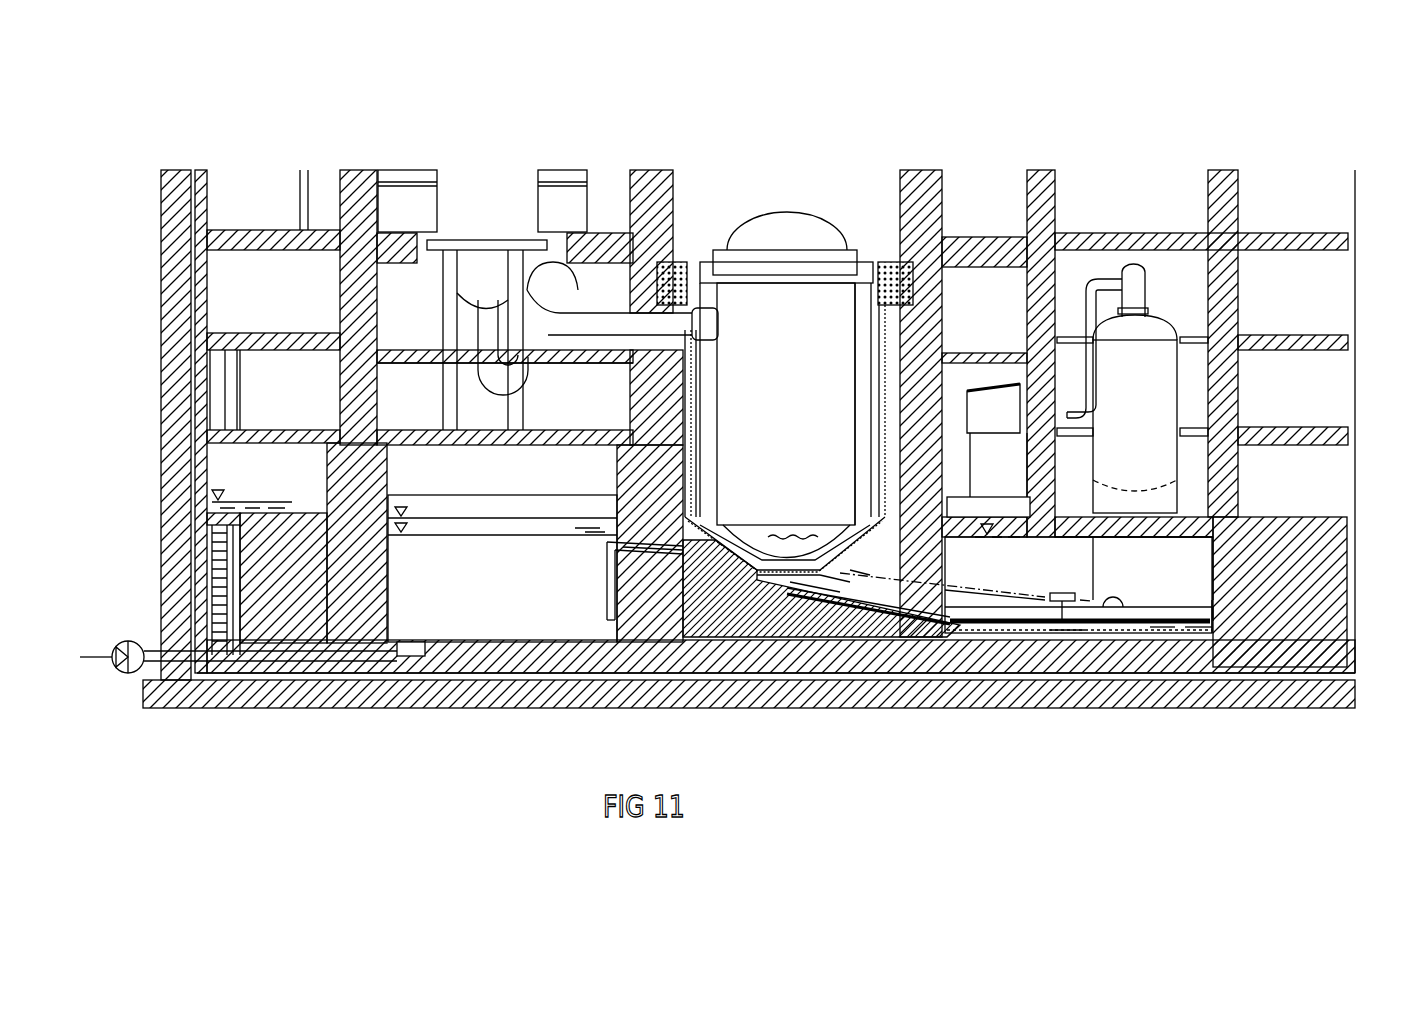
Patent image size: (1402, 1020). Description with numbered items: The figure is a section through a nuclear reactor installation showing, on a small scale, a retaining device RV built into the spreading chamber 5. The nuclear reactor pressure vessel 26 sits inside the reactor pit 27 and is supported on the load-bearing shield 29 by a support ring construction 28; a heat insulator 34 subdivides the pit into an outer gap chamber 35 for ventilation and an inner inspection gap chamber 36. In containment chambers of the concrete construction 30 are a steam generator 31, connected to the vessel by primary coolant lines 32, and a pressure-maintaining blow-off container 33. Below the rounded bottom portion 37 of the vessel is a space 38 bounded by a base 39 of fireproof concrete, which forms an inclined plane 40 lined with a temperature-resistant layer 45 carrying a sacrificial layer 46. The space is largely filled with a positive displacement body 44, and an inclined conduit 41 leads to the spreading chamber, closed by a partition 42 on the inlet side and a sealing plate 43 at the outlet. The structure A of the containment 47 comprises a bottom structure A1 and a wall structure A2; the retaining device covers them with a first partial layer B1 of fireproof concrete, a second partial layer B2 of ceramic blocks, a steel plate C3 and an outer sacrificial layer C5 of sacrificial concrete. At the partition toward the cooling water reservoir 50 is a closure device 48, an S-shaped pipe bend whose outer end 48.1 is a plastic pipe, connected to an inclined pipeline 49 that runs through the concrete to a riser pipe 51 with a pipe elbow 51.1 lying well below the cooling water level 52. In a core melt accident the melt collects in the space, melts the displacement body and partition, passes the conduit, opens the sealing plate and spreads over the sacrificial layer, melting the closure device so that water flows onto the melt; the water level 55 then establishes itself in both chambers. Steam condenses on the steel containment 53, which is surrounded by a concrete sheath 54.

The concrete sheath 54 is at (171, 185).
The containment 53 is at (202, 177).
The steam generator 31 is at (505, 188).
The primary coolant line 32 is at (498, 383).
The concrete construction 30 is at (547, 450).
The nuclear reactor pressure vessel 26 is at (820, 213).
The support ring construction 28 is at (680, 262).
The load-bearing shield 29 is at (692, 377).
The heat insulator 34 is at (688, 397).
The outer gap chamber 35 is at (688, 437).
The inner inspection gap chamber 36 is at (865, 398).
The reactor pit 27 is at (868, 353).
The containment 47 is at (994, 199).
The pressure-maintaining blow-off container 33 is at (1153, 332).
The temperature-resistant layer 45 is at (850, 547).
The water level 55 is at (987, 522).
The rounded bottom portion 37 is at (760, 592).
The space 38 is at (790, 575).
The base 39 is at (708, 610).
The sacrificial layer 46 is at (808, 560).
The positive displacement body 44 is at (822, 585).
The partition 42 is at (838, 580).
The inclined plane 40 is at (860, 575).
The sealing plate 43 is at (982, 633).
The retaining device RV is at (1105, 635).
The spreading chamber 5 is at (1078, 585).
The closure device 48 is at (1057, 593).
The inclined conduit 41 is at (997, 598).
The inclined pipeline 49 is at (958, 587).
The outer end 48.1 is at (1068, 640).
The bottom structure A1 is at (1160, 645).
The structure A is at (1198, 660).
The first partial layer B1 is at (1218, 618).
The second partial layer B2 is at (1235, 623).
The wall structure A2 is at (1210, 558).
The outer layer of the sacrificial layer C5 is at (1215, 613).
The steel plate C3 is at (1215, 613).
The cooling water reservoir 50 is at (502, 575).
The cooling water level 52 is at (400, 505).
The riser pipe 51 is at (607, 584).
The pipe elbow 51.1 is at (623, 553).